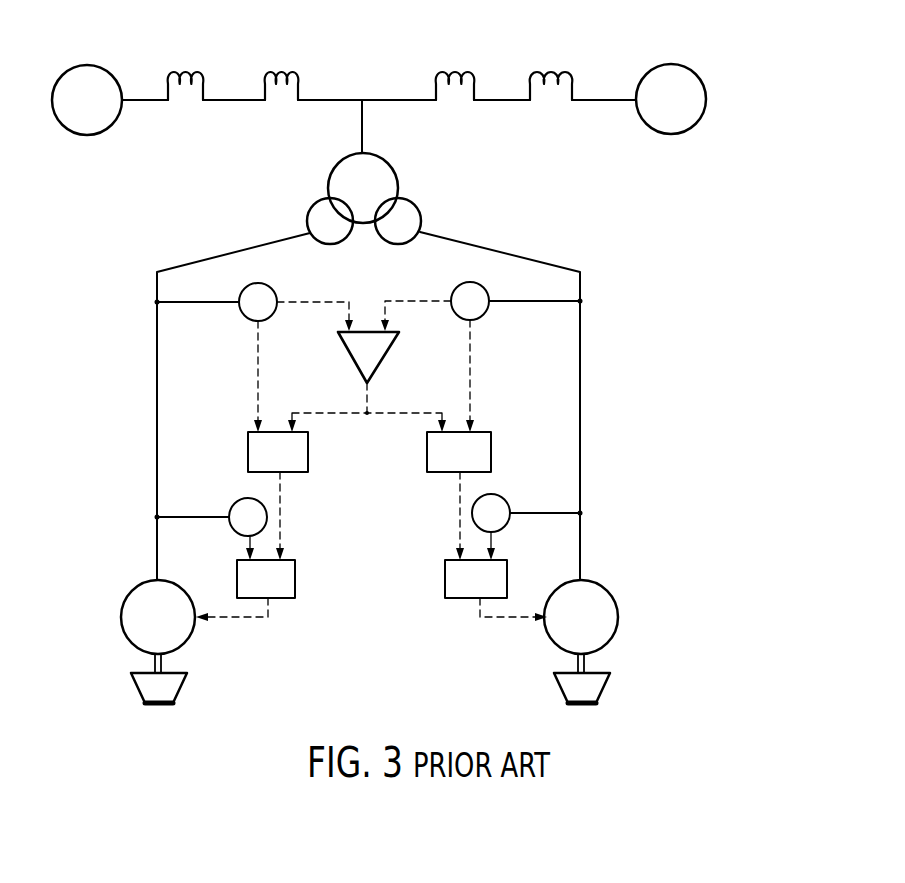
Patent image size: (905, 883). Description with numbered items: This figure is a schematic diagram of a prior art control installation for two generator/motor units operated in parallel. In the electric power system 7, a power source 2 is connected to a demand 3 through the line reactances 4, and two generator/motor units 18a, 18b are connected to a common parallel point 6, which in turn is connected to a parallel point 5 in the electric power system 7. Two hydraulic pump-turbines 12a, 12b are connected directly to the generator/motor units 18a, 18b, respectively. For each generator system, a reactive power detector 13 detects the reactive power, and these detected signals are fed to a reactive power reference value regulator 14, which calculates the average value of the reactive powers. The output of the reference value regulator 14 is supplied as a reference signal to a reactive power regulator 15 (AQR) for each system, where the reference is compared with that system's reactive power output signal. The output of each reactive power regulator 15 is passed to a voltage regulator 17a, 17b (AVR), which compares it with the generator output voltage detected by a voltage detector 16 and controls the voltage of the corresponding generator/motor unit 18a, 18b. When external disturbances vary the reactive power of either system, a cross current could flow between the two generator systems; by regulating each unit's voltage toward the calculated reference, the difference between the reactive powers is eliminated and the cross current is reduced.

The power source 2 is at (105, 77).
The demand 3 is at (702, 80).
The transmission line reactance 4 is at (300, 80).
The parallel point 5 is at (365, 97).
The parallel point 6 is at (400, 178).
The electric power system 7 is at (595, 98).
The hydraulic pump-turbine 12a is at (140, 686).
The hydraulic pump-turbine 12b is at (605, 690).
The reactive power detector 13 is at (278, 291).
The reactive power reference value regulator 14 is at (385, 366).
The reactive power regulator 15 is at (310, 453).
The voltage detector 16 is at (232, 506).
The voltage regulator 17a is at (296, 578).
The voltage regulator 17b is at (445, 578).
The generator/motor unit 18a is at (132, 590).
The generator/motor unit 18b is at (612, 590).